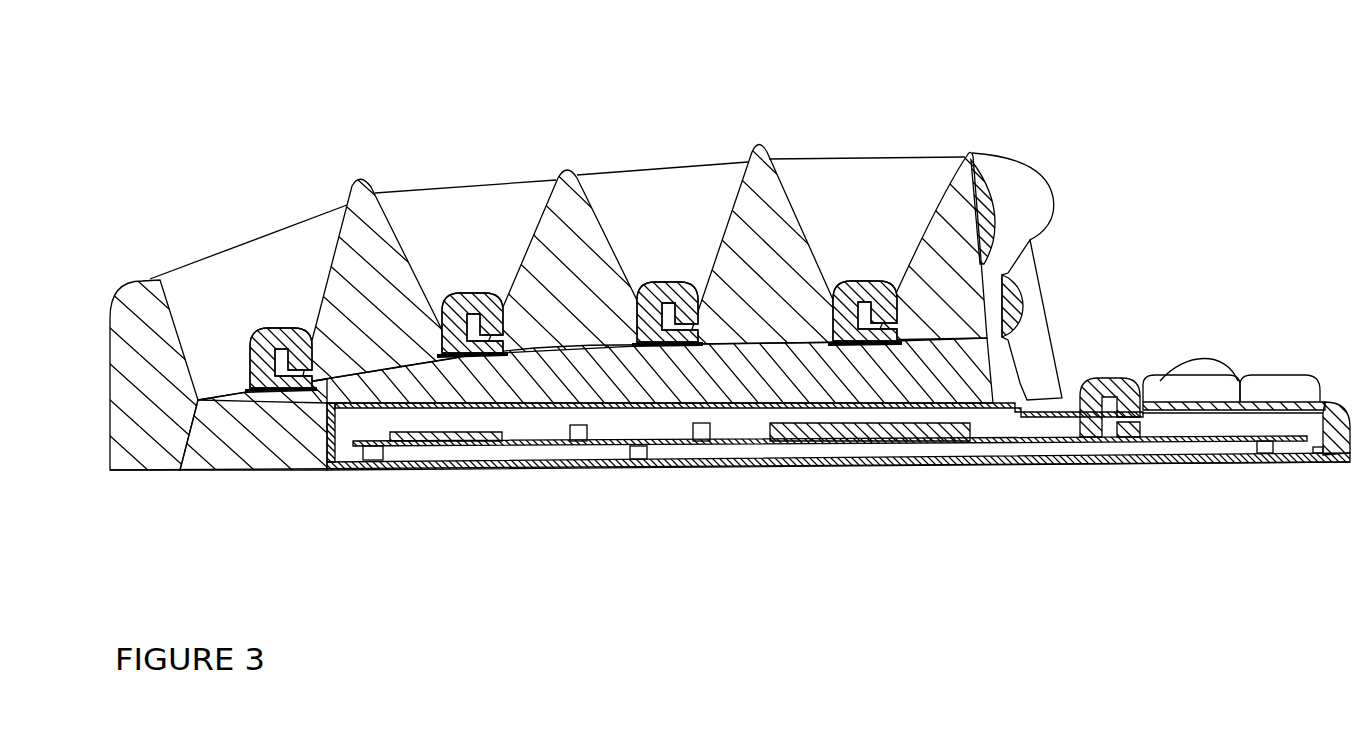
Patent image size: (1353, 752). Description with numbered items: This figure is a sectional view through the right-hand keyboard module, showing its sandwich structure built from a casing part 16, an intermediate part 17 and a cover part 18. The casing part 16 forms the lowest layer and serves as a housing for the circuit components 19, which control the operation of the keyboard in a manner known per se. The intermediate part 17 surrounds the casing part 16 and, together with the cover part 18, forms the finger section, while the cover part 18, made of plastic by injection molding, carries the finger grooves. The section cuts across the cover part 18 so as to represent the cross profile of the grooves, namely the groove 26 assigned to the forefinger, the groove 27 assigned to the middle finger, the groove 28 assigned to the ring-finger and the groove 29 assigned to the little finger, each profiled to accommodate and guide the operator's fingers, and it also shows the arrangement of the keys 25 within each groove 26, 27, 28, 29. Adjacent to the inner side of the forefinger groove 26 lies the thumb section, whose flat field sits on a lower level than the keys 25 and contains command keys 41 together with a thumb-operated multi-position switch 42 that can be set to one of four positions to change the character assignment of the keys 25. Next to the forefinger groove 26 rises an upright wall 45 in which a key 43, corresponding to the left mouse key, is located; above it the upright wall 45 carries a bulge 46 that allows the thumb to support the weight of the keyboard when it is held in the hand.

The casing part 16 is at (742, 420).
The intermediate part 17 is at (260, 437).
The cover part 18 is at (133, 312).
The circuit components 19 is at (577, 430).
The keys 25 is at (677, 280).
The groove 26 is at (868, 212).
The groove 27 is at (647, 220).
The groove 28 is at (470, 237).
The groove 29 is at (258, 275).
The keys 41 is at (1200, 375).
The multi-position switch 42 is at (1235, 365).
The key 43 is at (1030, 298).
The upright wall 45 is at (1020, 357).
The bulge 46 is at (1052, 192).